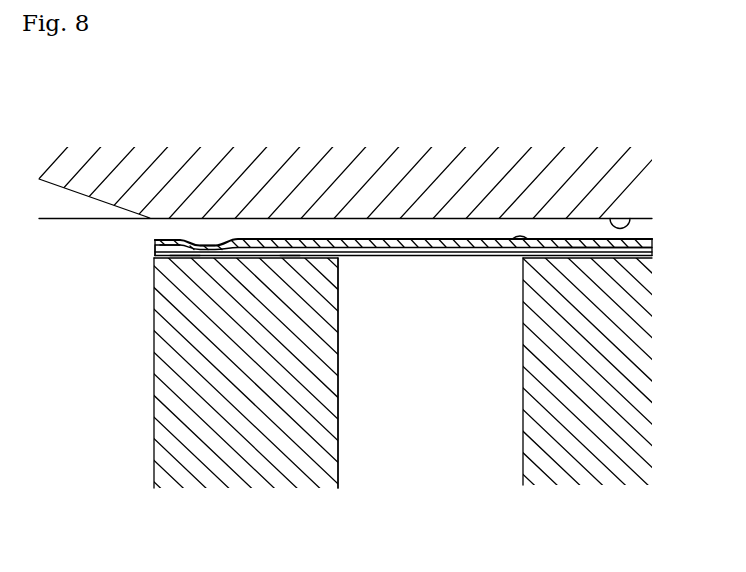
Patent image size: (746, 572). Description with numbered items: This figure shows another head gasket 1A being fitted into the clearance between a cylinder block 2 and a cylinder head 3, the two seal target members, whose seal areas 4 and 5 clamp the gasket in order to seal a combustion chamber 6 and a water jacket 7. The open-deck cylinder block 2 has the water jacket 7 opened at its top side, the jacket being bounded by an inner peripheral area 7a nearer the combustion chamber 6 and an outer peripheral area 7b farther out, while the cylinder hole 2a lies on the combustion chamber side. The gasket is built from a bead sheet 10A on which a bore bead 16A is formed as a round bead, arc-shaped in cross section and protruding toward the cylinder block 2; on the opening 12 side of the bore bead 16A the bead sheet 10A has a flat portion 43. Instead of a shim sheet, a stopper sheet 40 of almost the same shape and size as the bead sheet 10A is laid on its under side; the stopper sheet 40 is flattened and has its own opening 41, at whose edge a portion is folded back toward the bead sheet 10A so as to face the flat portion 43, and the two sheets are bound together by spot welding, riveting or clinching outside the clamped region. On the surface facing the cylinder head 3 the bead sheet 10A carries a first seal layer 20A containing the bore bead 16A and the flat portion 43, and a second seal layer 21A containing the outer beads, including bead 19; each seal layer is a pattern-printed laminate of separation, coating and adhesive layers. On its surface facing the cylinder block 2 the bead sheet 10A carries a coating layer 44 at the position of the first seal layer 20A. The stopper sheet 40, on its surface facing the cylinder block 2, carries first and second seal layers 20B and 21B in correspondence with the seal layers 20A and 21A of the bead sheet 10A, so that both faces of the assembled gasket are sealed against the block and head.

The head gasket 1A is at (340, 228).
The cylinder block 2 is at (637, 330).
The cylinder hole 2a is at (153, 452).
The cylinder head 3 is at (523, 163).
The seal area 4 is at (509, 252).
The seal area 5 is at (634, 217).
The combustion chamber 6 is at (49, 395).
The water jacket 7 is at (423, 397).
The inner peripheral area of water jacket 7a is at (338, 432).
The outer peripheral area of water jacket 7b is at (523, 443).
The bead sheet 10A is at (418, 236).
The opening 12 is at (153, 242).
The bore bead 16A is at (220, 245).
The bead 19 is at (592, 239).
The first seal layer 20A is at (288, 239).
The first seal layer 20B is at (188, 257).
The second seal layer 21A is at (637, 243).
The second seal layer 21B is at (633, 258).
The stopper sheet 40 is at (403, 260).
The opening 41 is at (153, 254).
The flat portion 43 is at (170, 241).
The coating layer 44 is at (290, 257).